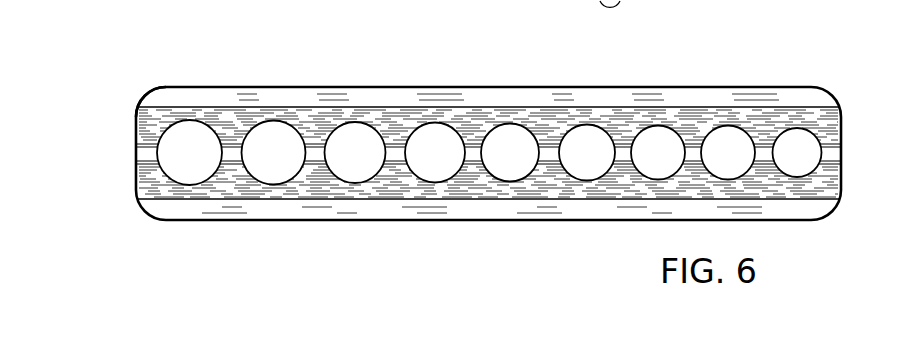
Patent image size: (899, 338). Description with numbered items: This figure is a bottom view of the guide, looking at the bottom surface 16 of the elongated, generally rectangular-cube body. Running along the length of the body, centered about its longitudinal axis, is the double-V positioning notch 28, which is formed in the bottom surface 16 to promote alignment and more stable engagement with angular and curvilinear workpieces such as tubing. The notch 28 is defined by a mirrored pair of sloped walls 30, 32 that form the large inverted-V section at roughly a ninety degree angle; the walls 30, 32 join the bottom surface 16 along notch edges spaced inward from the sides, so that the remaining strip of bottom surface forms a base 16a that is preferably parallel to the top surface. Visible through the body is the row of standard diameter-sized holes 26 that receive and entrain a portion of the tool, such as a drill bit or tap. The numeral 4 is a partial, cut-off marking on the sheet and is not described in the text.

The partial numeral (cut-off) 4 is at (21, 16).
The bottom surface 16 is at (459, 113).
The base 16a is at (160, 98).
The holes 26 is at (287, 165).
The double-V positioning notch 28 is at (136, 164).
The sloped wall 30 is at (823, 123).
The sloped wall 32 is at (810, 184).